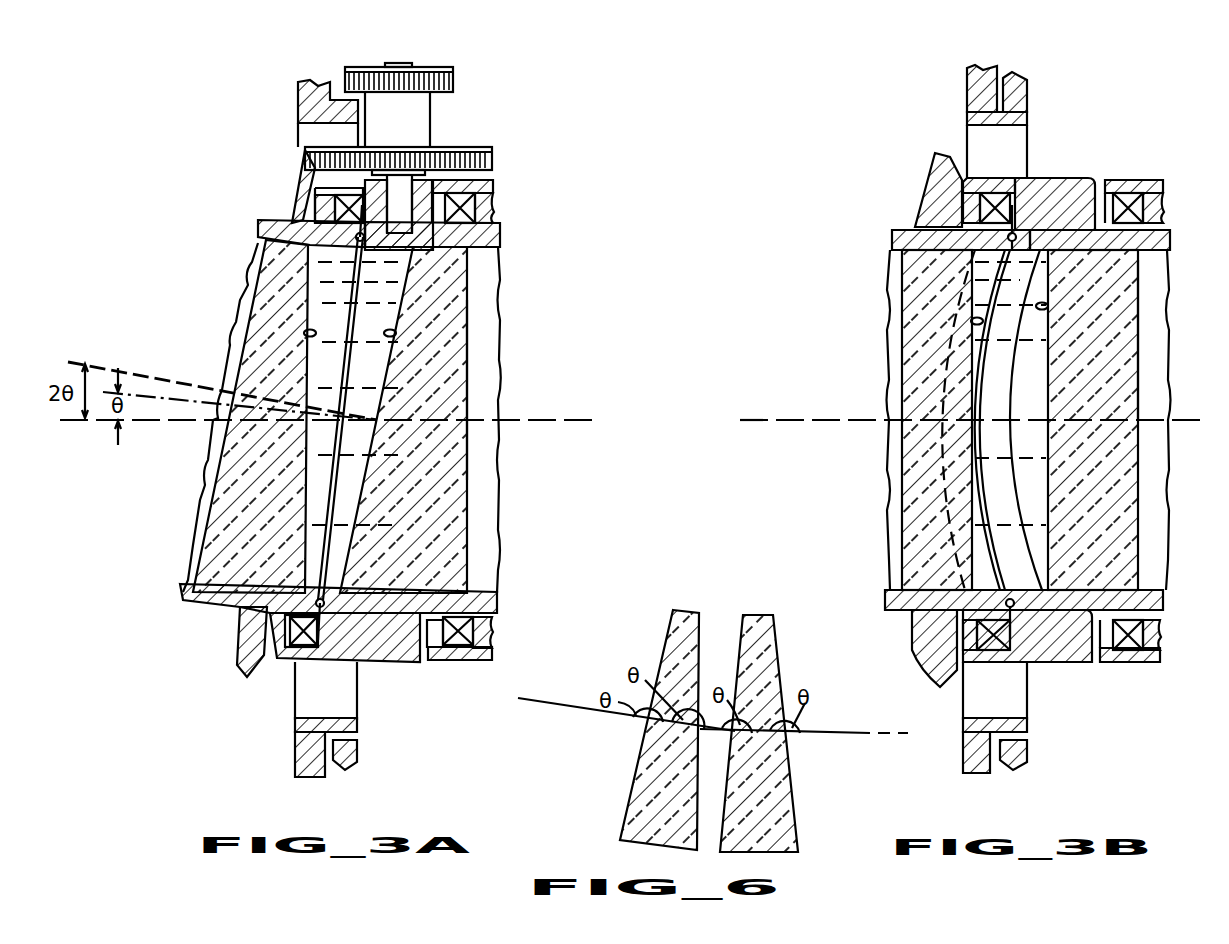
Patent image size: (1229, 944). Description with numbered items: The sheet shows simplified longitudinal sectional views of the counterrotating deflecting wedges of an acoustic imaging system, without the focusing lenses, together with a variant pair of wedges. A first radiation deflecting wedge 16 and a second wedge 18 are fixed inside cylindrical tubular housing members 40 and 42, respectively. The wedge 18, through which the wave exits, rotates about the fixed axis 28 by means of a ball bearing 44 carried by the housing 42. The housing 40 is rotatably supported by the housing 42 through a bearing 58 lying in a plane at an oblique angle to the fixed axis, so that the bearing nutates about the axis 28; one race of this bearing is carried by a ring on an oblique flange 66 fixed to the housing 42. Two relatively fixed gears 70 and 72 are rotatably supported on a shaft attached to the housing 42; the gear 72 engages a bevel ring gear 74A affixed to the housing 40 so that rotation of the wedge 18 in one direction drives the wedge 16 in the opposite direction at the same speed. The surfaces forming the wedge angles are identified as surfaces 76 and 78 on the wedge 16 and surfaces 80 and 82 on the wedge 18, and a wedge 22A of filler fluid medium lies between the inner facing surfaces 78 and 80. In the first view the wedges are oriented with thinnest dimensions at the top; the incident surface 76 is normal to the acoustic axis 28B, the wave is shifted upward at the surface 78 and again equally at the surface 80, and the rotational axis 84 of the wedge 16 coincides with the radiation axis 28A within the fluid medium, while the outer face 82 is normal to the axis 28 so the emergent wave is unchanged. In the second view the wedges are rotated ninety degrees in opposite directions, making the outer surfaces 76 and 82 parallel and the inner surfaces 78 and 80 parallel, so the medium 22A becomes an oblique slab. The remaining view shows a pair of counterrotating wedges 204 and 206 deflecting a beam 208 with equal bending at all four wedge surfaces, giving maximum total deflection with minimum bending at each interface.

In FIG. 3A, the radiation deflecting wedge 16 is at (228, 518).
In FIG. 3B, the radiation deflecting wedge 16 is at (915, 528).
In FIG. 3A, the radiation deflecting wedge 18 is at (450, 515).
In FIG. 3B, the radiation deflecting wedge 18 is at (1118, 538).
In FIG. 3A, the wedge of filler fluid medium 22A is at (393, 277).
In FIG. 3B, the wedge of filler fluid medium 22A is at (1025, 268).
In FIG. 3A, the fixed axis 28 is at (549, 421).
In FIG. 3B, the fixed axis 28 is at (1195, 420).
In FIG. 3A, the radiation axis 28A is at (322, 420).
In FIG. 3B, the radiation axis 28A is at (980, 448).
In FIG. 3A, the acoustic axis 28B is at (100, 370).
In FIG. 3B, the acoustic axis 28B is at (766, 420).
In FIG. 3A, the tubular housing member 40 is at (258, 228).
In FIG. 3B, the tubular housing member 40 is at (892, 237).
In FIG. 3A, the tubular housing member 42 is at (500, 237).
In FIG. 3B, the tubular housing member 42 is at (1170, 237).
In FIG. 3A, the ball bearing 44 is at (470, 205).
In FIG. 3B, the ball bearing 44 is at (1140, 205).
In FIG. 3A, the bearing 58 is at (340, 205).
In FIG. 3B, the bearing 58 is at (985, 205).
In FIG. 3A, the oblique flange 66 is at (375, 650).
In FIG. 3B, the oblique flange 66 is at (1045, 185).
In FIG. 3A, the gear 70 is at (355, 68).
In FIG. 3A, the gear 72 is at (485, 155).
In FIG. 3A, the bevel ring gear 74A is at (297, 160).
In FIG. 3B, the bevel ring gear 74A is at (930, 175).
In FIG. 3A, the wedge surface 76 is at (260, 283).
In FIG. 3B, the wedge surface 76 is at (905, 295).
In FIG. 3A, the wedge surface 78 is at (304, 333).
In FIG. 3B, the wedge surface 78 is at (971, 322).
In FIG. 3A, the wedge surface 80 is at (396, 333).
In FIG. 3B, the wedge surface 80 is at (1048, 306).
In FIG. 3A, the wedge surface 82 is at (467, 388).
In FIG. 3B, the wedge surface 82 is at (1140, 293).
In FIG. 3A, the rotational axis 84 is at (155, 397).
In FIG. 6, the counterrotating wedge 204 is at (655, 790).
In FIG. 6, the counterrotating wedge 206 is at (770, 783).
In FIG. 6, the beam 208 is at (713, 698).